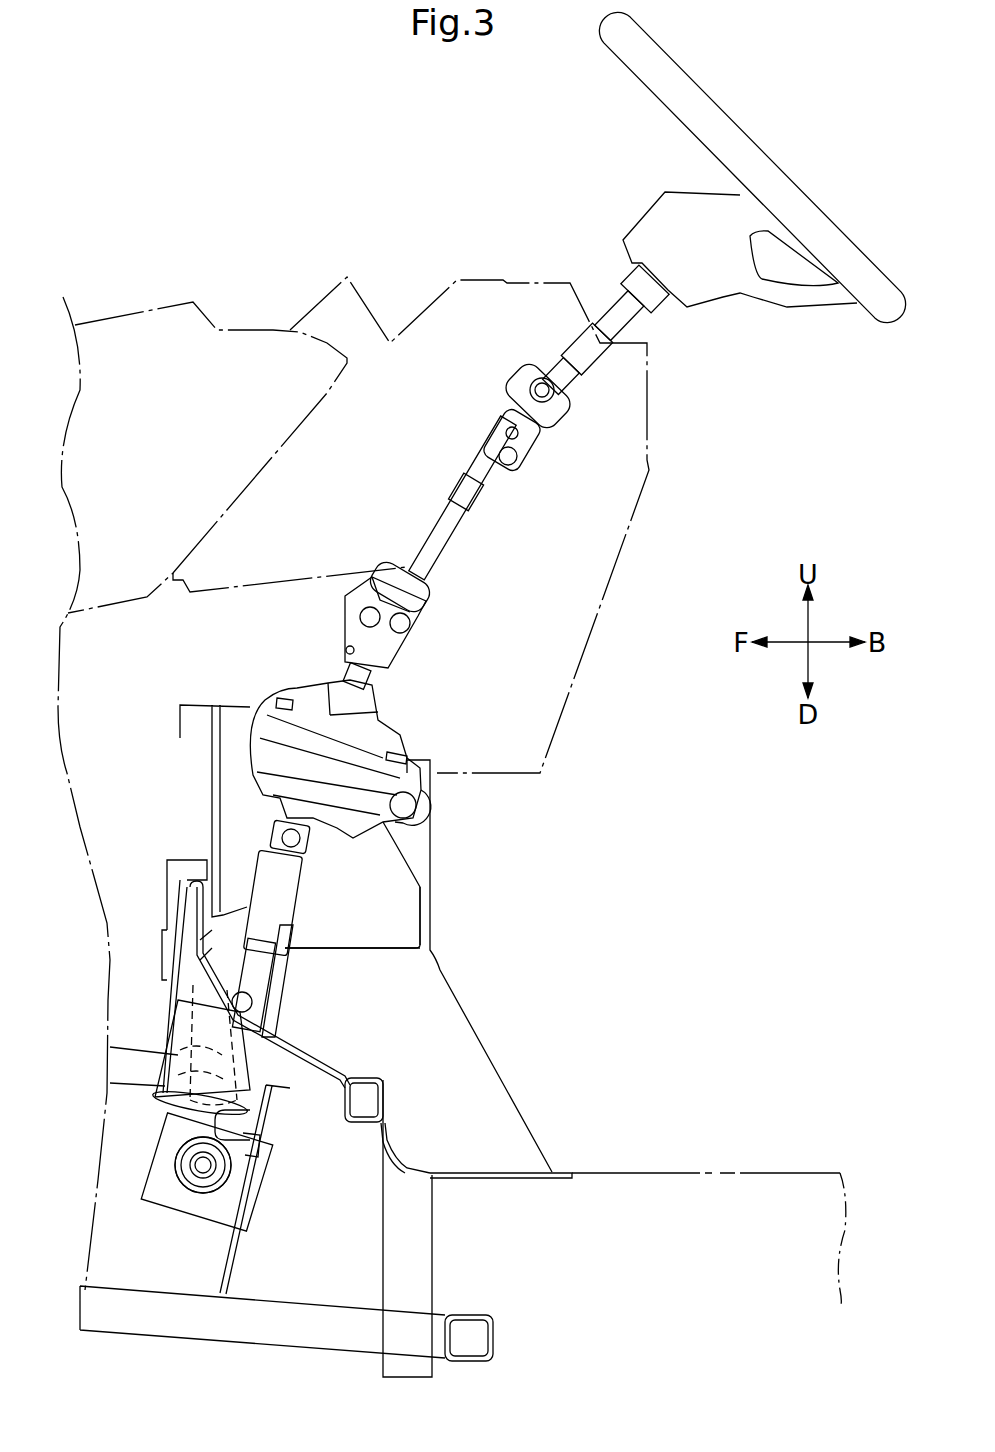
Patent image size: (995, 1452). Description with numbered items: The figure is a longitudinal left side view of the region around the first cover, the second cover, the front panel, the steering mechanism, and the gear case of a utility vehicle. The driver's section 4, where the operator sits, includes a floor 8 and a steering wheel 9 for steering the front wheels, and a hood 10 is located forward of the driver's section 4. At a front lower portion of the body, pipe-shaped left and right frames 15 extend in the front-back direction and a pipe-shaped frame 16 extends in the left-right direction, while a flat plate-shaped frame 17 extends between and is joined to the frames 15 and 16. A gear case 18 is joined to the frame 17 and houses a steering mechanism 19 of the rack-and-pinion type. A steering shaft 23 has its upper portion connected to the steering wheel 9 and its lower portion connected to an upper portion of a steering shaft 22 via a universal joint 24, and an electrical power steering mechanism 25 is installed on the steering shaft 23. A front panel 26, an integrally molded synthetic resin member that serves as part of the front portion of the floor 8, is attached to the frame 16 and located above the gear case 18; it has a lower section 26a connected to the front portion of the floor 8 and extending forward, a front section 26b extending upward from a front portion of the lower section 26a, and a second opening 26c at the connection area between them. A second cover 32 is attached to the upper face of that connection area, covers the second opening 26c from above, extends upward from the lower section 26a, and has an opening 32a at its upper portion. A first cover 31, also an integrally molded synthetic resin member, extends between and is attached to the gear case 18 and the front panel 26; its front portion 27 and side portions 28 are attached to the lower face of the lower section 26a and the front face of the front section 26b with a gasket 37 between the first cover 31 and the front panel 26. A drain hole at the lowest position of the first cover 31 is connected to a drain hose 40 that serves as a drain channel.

The driver's section 4 is at (496, 147).
The floor 8 is at (653, 1173).
The steering wheel 9 is at (718, 127).
The hood 10 is at (122, 312).
The frame 15 is at (327, 1303).
The frame 16 is at (363, 1123).
The frame 17 is at (230, 1210).
The gear case 18 is at (152, 1165).
The steering mechanism 19 is at (124, 1174).
The steering shaft 22 is at (177, 1047).
The steering shaft 23 is at (243, 917).
The universal joint 24 is at (257, 977).
The electrical power steering mechanism 25 is at (298, 698).
The front panel 26 is at (492, 1058).
The lower section 26a is at (497, 1173).
The front section 26b is at (213, 791).
The second opening 26c is at (200, 948).
The front portion 27 is at (177, 1058).
The side portion 28 is at (260, 1067).
The first cover 31 is at (170, 1020).
The second cover 32 is at (285, 963).
The opening 32a is at (250, 892).
The gasket 37 is at (210, 907).
The drain hose 40 is at (225, 1125).